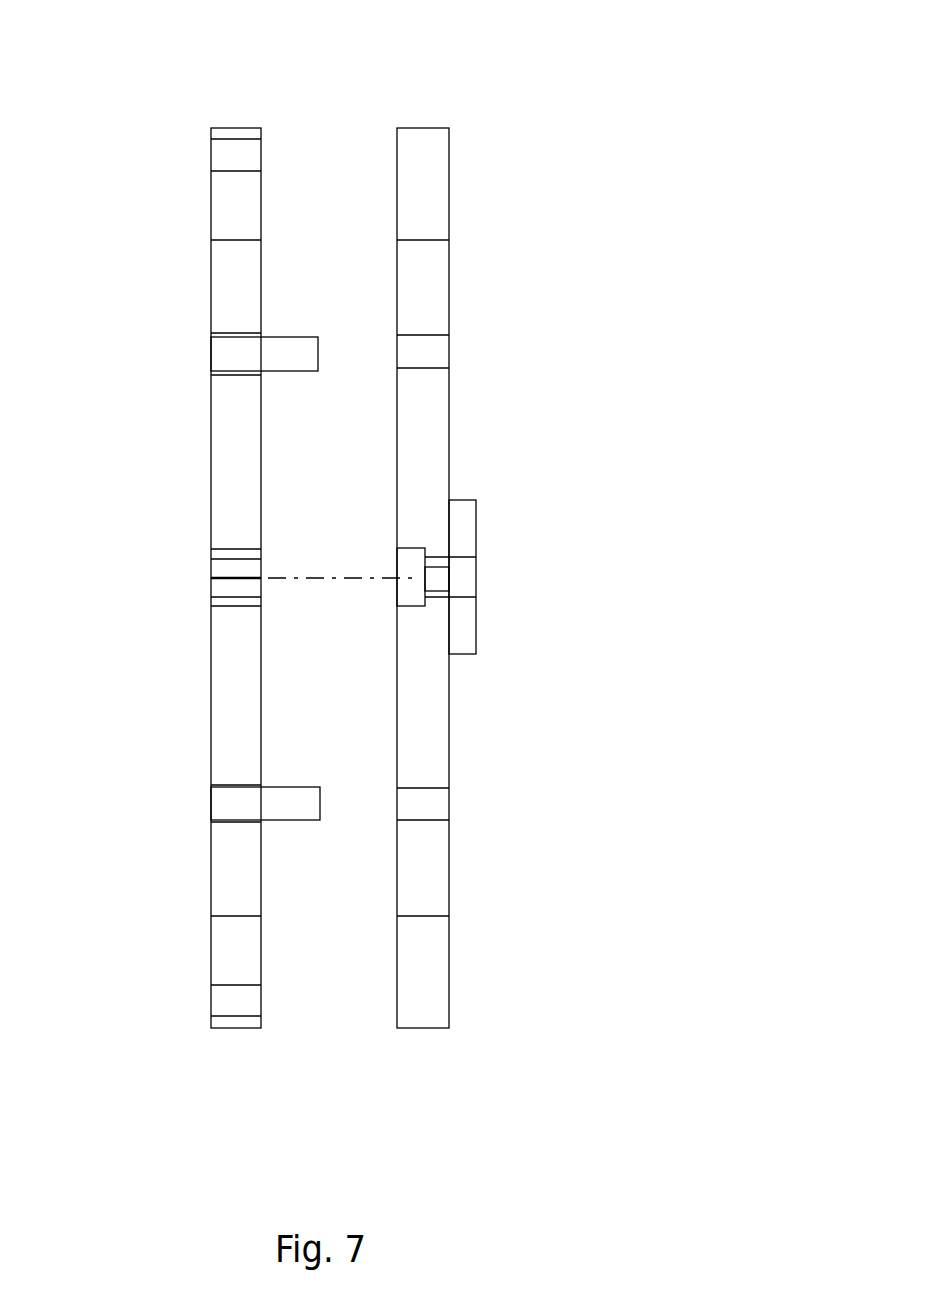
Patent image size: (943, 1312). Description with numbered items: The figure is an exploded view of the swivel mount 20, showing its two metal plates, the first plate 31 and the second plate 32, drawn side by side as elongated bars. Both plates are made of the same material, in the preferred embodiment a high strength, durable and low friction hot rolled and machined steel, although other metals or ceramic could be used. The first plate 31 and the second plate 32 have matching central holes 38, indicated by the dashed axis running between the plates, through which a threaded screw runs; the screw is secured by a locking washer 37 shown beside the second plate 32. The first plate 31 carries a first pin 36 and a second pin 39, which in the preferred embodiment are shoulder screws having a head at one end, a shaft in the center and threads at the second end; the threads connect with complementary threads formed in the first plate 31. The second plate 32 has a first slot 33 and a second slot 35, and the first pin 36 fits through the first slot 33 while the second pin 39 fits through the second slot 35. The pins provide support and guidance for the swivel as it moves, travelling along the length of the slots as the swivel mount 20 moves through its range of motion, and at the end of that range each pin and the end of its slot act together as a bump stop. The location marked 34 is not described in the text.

The swivel mount 20 is at (684, 120).
The first plate 31 is at (210, 130).
The second plate 32 is at (450, 127).
The first slot 33 is at (446, 800).
The pivot portion 34 is at (210, 578).
The second slot 35 is at (450, 352).
The first pin 36 is at (210, 800).
The locking washer 37 is at (478, 530).
The central holes 38 is at (447, 580).
The second pin 39 is at (210, 356).